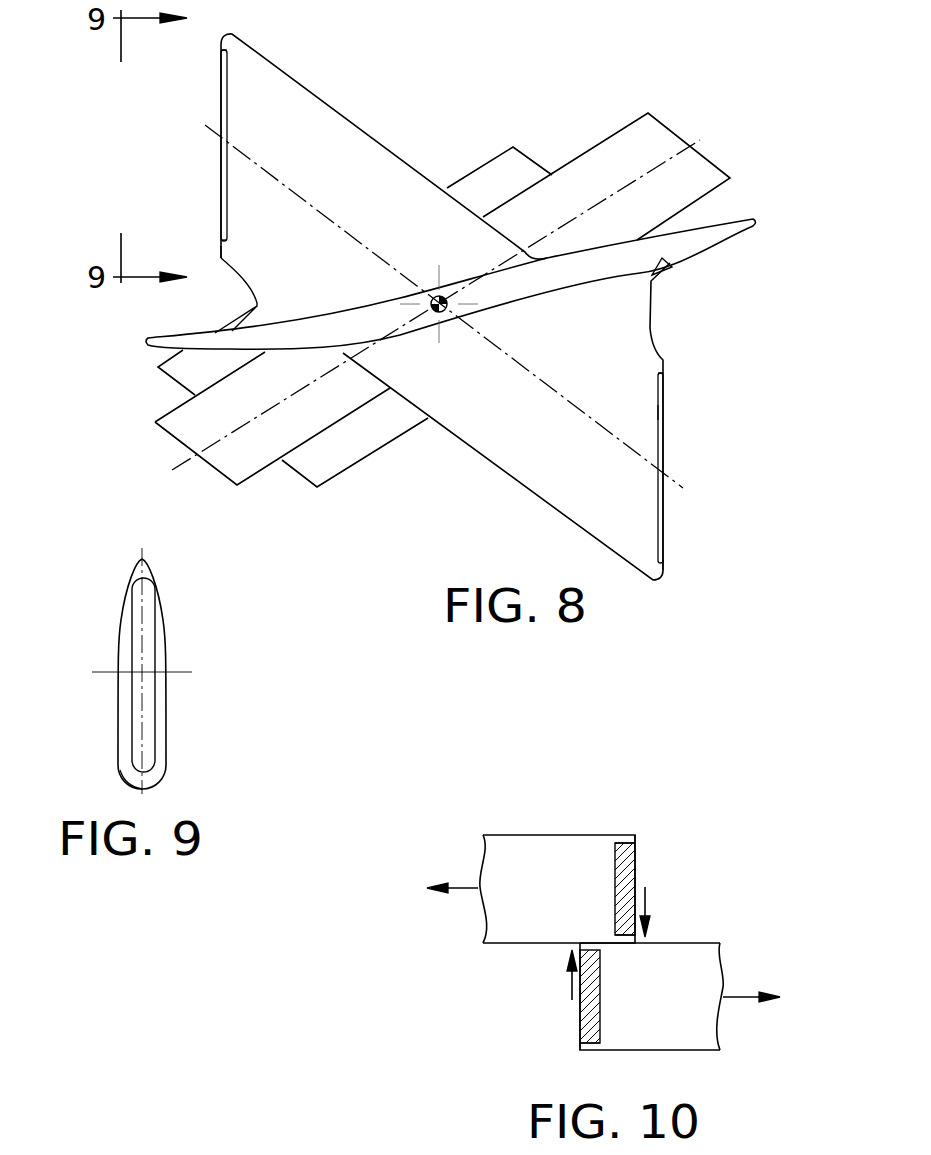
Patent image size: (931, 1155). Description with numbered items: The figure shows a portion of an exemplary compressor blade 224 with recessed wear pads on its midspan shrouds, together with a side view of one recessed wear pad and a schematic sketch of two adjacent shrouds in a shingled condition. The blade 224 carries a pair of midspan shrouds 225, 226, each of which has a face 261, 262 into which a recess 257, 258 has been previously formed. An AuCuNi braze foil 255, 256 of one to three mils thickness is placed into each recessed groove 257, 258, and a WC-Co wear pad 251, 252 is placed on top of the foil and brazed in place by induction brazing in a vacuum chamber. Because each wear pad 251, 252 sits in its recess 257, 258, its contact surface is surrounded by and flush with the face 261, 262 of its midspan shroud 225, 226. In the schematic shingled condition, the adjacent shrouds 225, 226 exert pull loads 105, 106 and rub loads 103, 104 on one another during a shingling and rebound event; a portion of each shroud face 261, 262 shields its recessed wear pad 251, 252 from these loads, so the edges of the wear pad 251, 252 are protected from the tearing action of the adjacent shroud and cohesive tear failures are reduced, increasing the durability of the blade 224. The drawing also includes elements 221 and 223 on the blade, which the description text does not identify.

In FIG. 8, the paddle 221 is at (345, 445).
In FIG. 8, the paddle 223 is at (188, 425).
In FIG. 8, the blade 224 is at (283, 328).
In FIG. 8, the midspan shroud 225 is at (313, 108).
In FIG. 9, the midspan shroud 225 is at (126, 563).
In FIG. 10, the midspan shroud 225 is at (528, 928).
In FIG. 8, the midspan shroud 226 is at (562, 487).
In FIG. 10, the midspan shroud 226 is at (680, 1035).
In FIG. 8, the wear pad 251 is at (221, 161).
In FIG. 9, the wear pad 251 is at (150, 692).
In FIG. 10, the wear pad 251 is at (627, 870).
In FIG. 8, the wear pad 252 is at (663, 452).
In FIG. 10, the wear pad 252 is at (590, 1028).
In FIG. 8, the braze foil 255 is at (220, 240).
In FIG. 8, the braze foil 256 is at (662, 372).
In FIG. 8, the recess 257 is at (225, 75).
In FIG. 10, the recess 257 is at (613, 878).
In FIG. 8, the recess 258 is at (660, 402).
In FIG. 10, the recess 258 is at (600, 1030).
In FIG. 8, the face 261 is at (221, 251).
In FIG. 9, the face 261 is at (128, 768).
In FIG. 10, the face 261 is at (635, 835).
In FIG. 8, the face 262 is at (663, 568).
In FIG. 10, the face 262 is at (582, 1047).
In FIG. 10, the rub load 103 is at (647, 898).
In FIG. 10, the rub load 104 is at (572, 985).
In FIG. 10, the pull load 105 is at (460, 893).
In FIG. 10, the pull load 106 is at (740, 995).